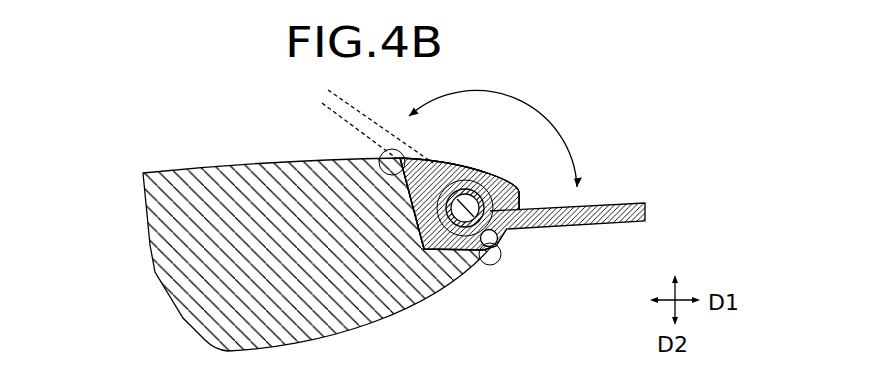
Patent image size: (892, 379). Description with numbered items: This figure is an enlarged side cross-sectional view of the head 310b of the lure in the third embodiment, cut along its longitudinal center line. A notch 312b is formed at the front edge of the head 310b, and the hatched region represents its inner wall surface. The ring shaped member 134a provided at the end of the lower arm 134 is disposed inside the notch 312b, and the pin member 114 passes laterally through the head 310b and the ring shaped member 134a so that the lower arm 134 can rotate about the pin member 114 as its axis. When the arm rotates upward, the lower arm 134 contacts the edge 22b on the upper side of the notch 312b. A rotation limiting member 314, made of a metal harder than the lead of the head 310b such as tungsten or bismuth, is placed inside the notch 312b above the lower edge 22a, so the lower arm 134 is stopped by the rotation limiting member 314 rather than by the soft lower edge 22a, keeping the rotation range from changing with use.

The head 310b is at (181, 151).
The edge on the upper side of the notch 22b is at (381, 151).
The pin member 114 is at (470, 180).
The notch 312b is at (410, 205).
The ring shaped member 134a is at (415, 240).
The lower edge of the notch 22a is at (492, 265).
The rotation limiting member 314 is at (497, 246).
The lower arm 134 is at (607, 228).